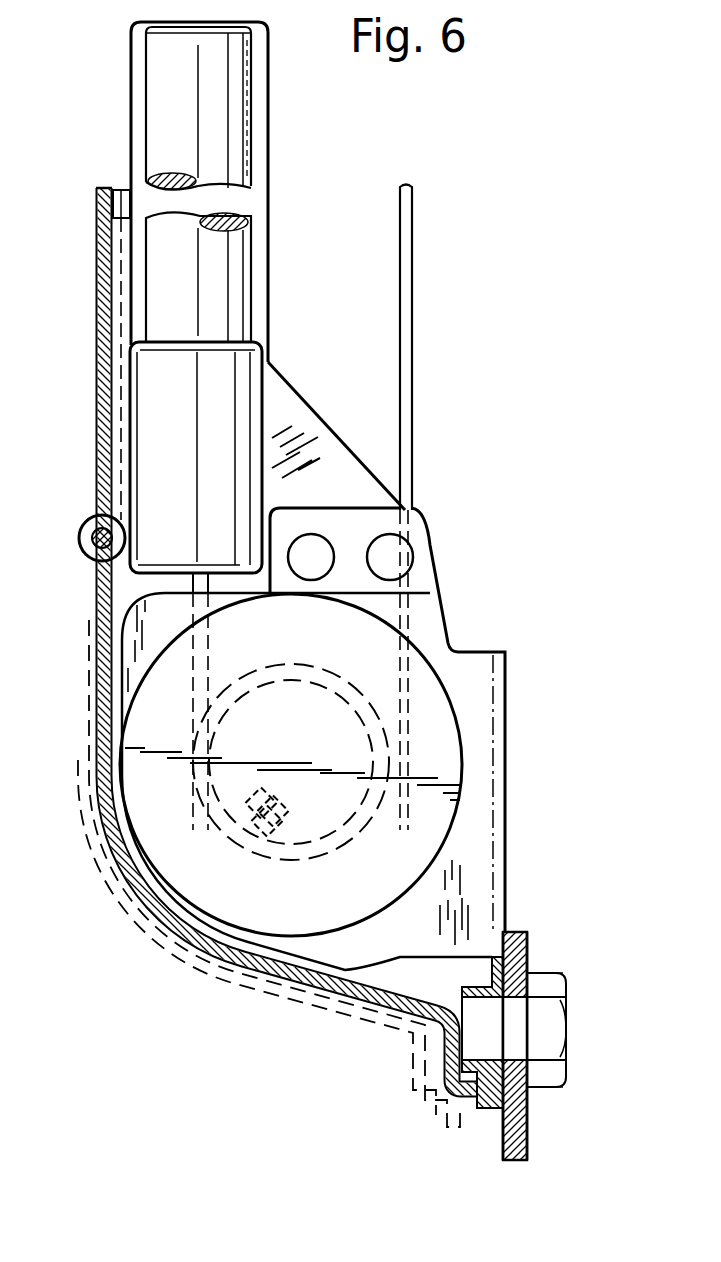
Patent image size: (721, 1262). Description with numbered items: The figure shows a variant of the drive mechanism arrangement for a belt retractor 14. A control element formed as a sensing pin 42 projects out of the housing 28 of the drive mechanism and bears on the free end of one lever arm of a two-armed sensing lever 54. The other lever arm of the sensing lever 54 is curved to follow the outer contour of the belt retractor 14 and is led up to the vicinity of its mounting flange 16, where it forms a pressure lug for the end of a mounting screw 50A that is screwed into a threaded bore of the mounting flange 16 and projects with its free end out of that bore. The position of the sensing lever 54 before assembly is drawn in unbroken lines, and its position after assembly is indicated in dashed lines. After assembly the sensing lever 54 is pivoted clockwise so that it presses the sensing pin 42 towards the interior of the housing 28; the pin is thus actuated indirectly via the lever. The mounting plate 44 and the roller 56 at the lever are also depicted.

The belt retractor 14 is at (462, 698).
The mounting flange 16 is at (527, 958).
The housing 28 is at (134, 40).
The sensing pin 42 is at (121, 190).
The mounting plate 44 is at (530, 933).
The mounting screw 50A is at (552, 1034).
The sensing lever 54 is at (97, 627).
The roller 56 is at (78, 540).